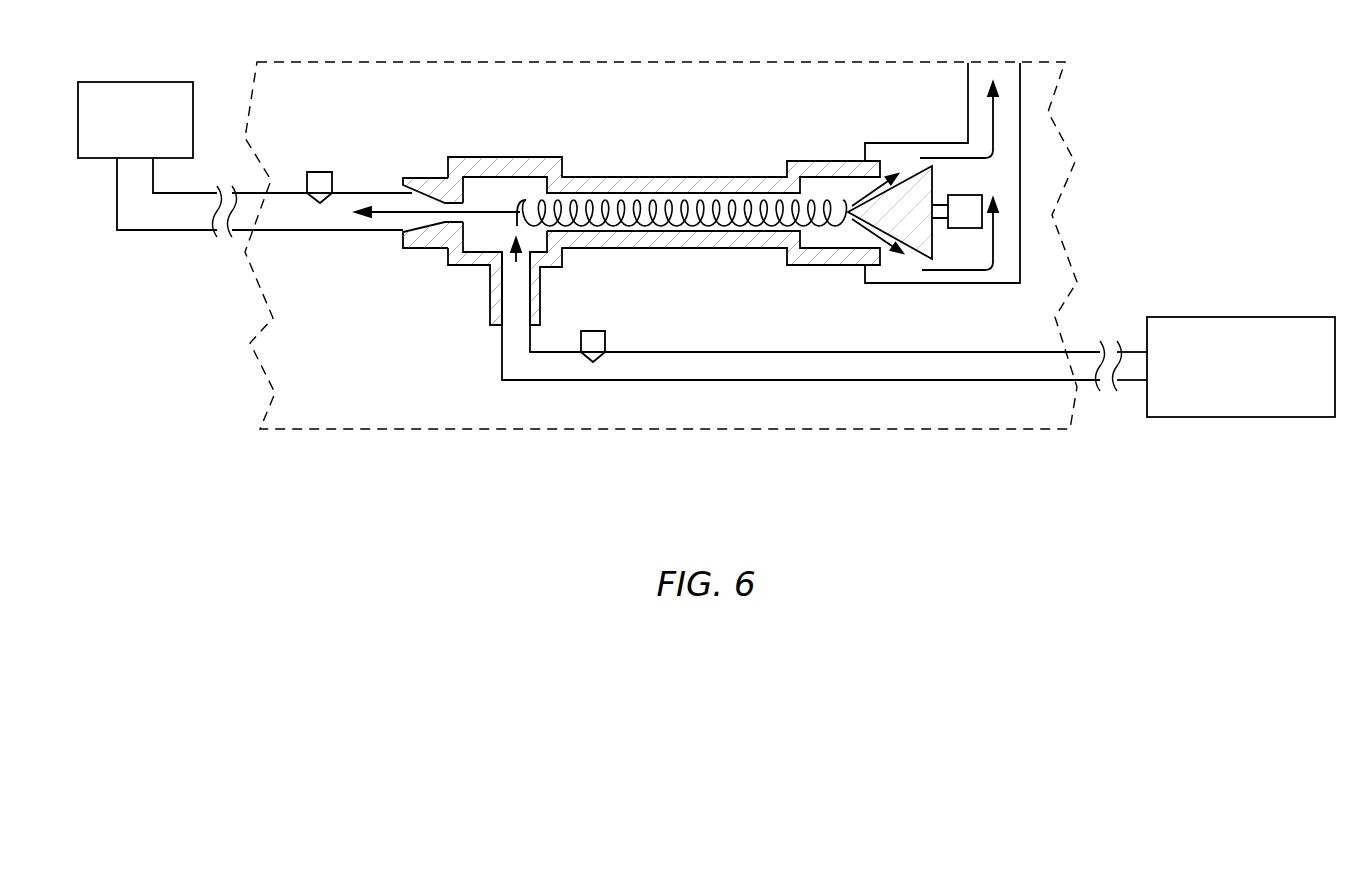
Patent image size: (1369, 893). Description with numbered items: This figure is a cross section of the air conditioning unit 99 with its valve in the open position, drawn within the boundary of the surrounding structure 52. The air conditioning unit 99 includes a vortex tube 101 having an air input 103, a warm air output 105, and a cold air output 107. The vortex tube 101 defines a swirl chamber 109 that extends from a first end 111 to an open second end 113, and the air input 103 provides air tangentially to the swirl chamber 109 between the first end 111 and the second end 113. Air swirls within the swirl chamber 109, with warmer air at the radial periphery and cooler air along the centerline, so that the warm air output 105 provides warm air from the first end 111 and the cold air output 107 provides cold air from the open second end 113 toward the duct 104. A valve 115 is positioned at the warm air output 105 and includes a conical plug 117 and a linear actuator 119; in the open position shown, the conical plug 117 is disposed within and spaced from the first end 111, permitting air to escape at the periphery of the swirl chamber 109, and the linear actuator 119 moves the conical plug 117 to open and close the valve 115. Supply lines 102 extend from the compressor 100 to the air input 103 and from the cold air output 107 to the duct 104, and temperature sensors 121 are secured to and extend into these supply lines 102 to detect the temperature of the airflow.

The aircraft structure 52 is at (303, 423).
The air conditioning unit 99 is at (543, 93).
The compressor 100 is at (1305, 317).
The vortex tube 101 is at (670, 177).
The supply lines 102 is at (137, 231).
The air input 103 is at (490, 300).
The duct 104 is at (86, 82).
The warm air output 105 is at (852, 267).
The cold air output 107 is at (422, 248).
The swirl chamber 109 is at (683, 227).
The first end 111 is at (868, 247).
The open second end 113 is at (425, 205).
The valve 115 is at (830, 76).
The conical plug 117 is at (910, 190).
The linear actuator 119 is at (962, 195).
The temperature sensors 121 is at (319, 172).